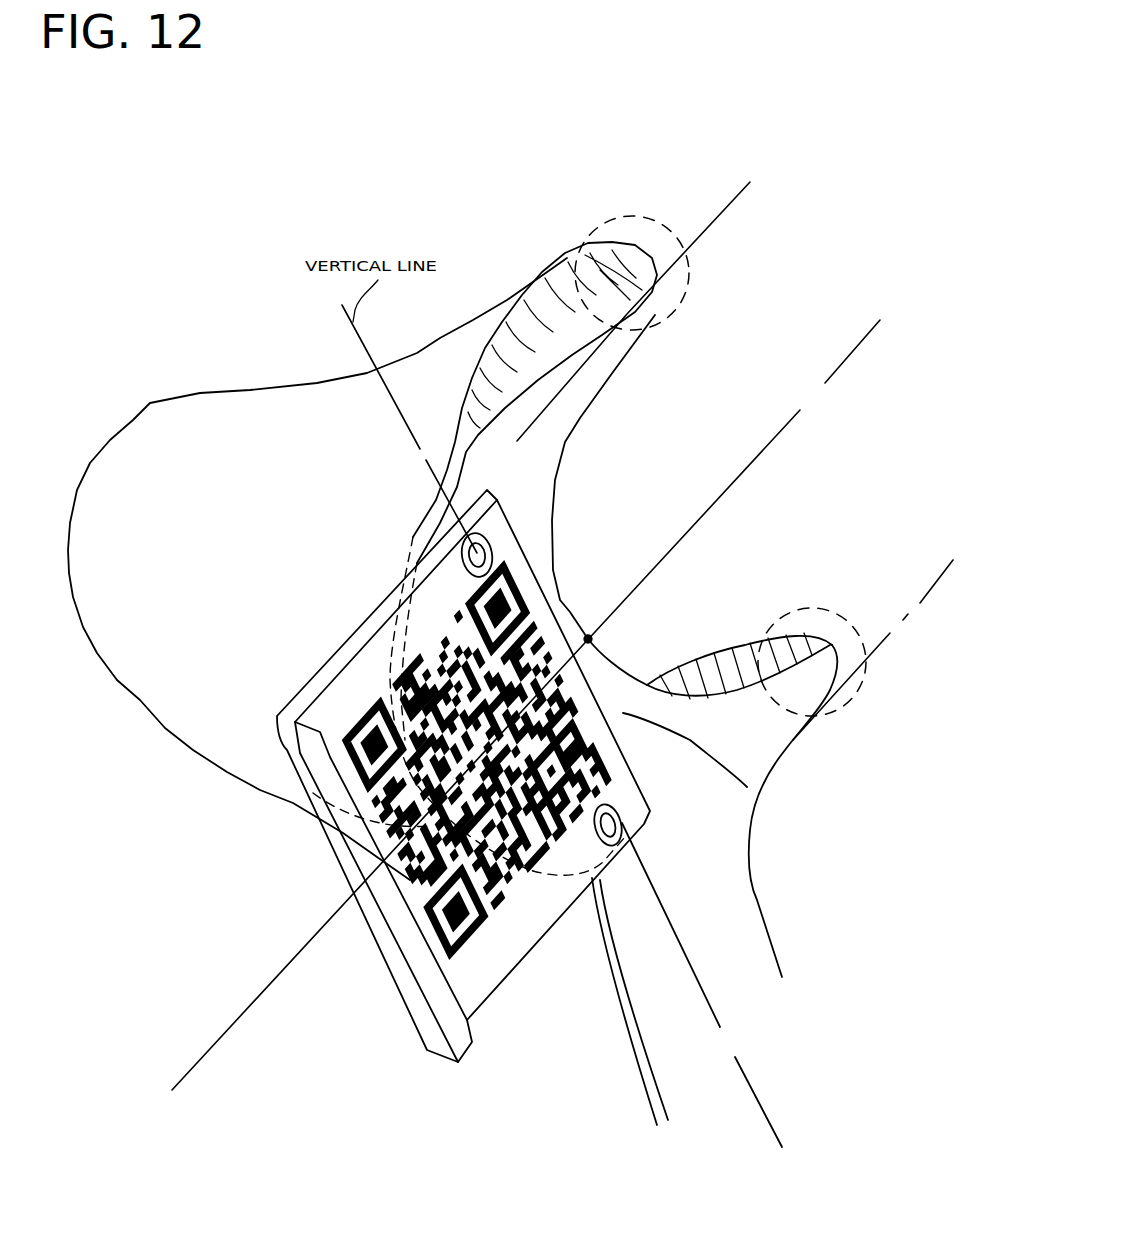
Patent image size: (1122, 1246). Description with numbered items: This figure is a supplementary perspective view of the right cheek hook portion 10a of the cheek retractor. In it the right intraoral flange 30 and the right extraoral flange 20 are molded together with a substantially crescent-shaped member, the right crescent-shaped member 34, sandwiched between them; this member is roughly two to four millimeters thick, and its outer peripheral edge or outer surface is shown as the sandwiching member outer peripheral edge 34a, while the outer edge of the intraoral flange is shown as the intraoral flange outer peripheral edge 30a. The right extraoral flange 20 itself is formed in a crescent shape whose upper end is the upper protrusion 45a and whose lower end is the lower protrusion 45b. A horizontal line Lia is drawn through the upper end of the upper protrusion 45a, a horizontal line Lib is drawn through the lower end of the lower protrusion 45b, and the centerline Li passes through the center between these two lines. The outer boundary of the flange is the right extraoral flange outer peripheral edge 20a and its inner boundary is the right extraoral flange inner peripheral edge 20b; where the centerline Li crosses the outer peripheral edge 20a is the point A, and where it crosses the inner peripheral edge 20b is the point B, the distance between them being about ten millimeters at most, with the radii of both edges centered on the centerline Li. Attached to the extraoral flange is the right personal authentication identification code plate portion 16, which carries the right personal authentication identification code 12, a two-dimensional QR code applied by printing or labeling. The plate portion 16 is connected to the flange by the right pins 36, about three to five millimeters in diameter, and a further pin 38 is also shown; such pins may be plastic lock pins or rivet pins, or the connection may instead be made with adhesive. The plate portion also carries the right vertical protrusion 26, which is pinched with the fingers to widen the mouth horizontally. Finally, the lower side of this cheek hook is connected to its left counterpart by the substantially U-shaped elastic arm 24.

The right cheek hook portion 10a is at (487, 176).
The right personal authentication identification code 12 is at (505, 897).
The right personal authentication identification code plate portion 16 is at (257, 718).
The right extraoral flange 20 is at (747, 787).
The right extraoral flange outer peripheral edge 20a is at (477, 556).
The right extraoral flange inner peripheral edge 20b is at (590, 639).
The arm 24 is at (710, 962).
The right vertical protrusion 26 is at (337, 787).
The right intraoral flange 30 is at (247, 430).
The intraoral flange outer peripheral edge 30a is at (148, 407).
The right crescent-shaped member 34 is at (555, 285).
The sandwiching member outer peripheral edge 34a is at (507, 327).
The right pins 36 is at (482, 555).
The pin 38 is at (608, 825).
The upper protrusion 45a is at (643, 215).
The lower protrusion 45b is at (868, 652).
The point A is at (590, 633).
The point B is at (430, 800).
The centerline Li is at (757, 460).
The horizontal line Lia is at (748, 183).
The horizontal line Lib is at (877, 606).